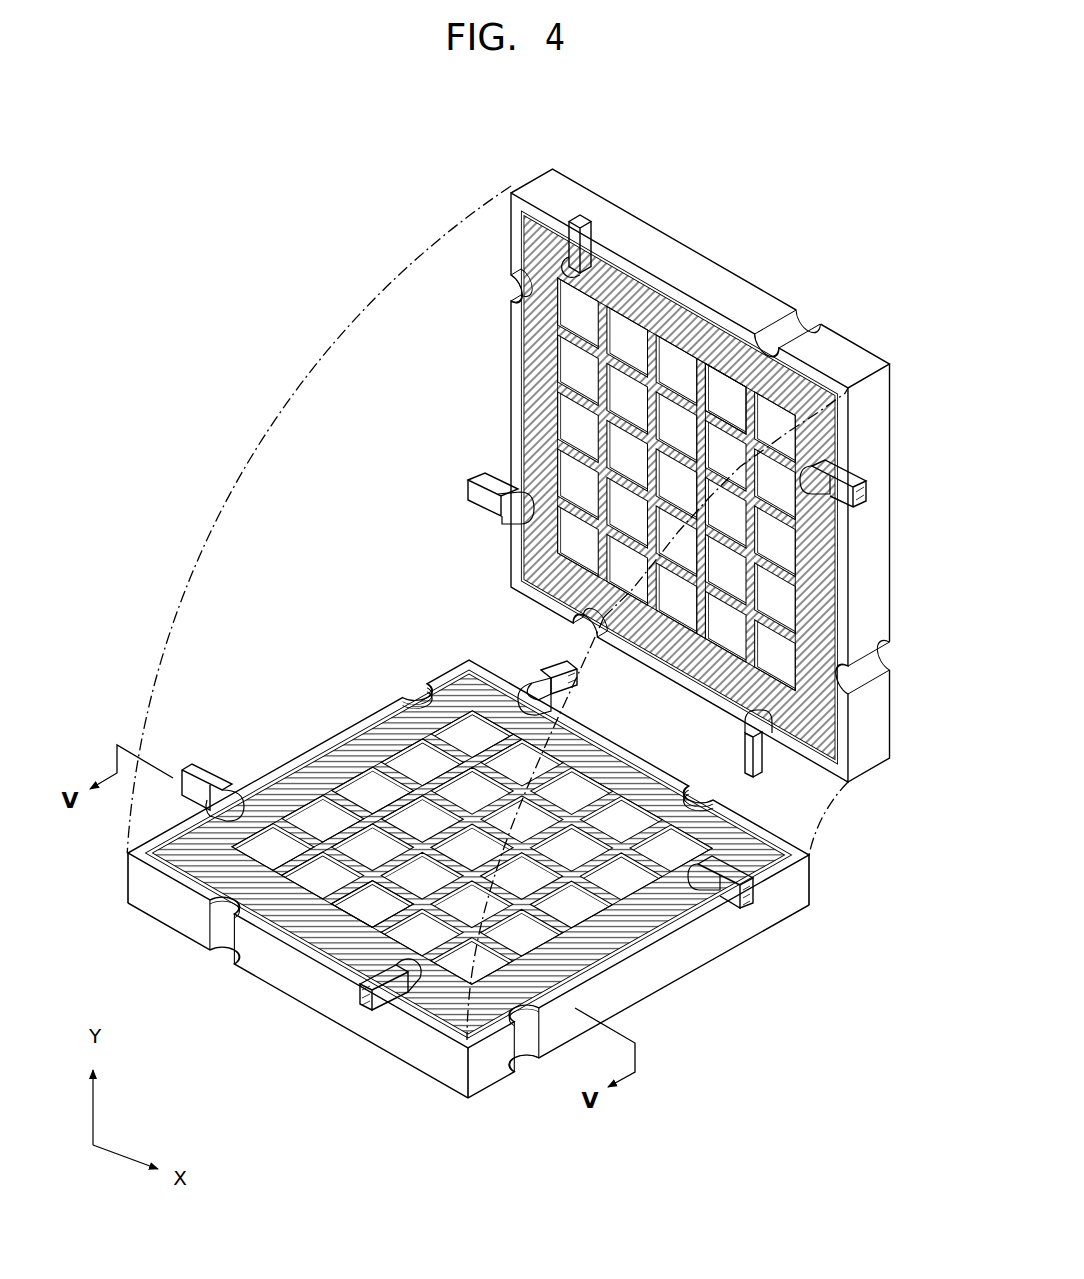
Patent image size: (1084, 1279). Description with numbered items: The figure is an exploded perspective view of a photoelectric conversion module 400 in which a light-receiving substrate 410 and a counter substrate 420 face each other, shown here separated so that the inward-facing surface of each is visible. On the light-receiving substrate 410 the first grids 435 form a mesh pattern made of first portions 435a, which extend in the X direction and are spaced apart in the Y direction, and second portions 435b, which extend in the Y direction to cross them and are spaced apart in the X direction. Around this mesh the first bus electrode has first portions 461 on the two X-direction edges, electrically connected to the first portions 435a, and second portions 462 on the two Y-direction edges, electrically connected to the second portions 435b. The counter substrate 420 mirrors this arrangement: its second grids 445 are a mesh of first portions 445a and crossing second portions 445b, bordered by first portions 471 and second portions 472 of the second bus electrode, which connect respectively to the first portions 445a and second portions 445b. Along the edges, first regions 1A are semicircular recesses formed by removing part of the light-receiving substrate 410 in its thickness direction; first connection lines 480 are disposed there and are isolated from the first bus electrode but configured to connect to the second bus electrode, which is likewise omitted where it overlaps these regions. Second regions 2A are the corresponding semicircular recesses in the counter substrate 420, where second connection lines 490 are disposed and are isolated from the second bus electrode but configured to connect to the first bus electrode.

The photoelectric conversion module 400 is at (295, 228).
The light-receiving substrate 410 is at (861, 355).
The counter substrate 420 is at (722, 940).
The first grids 435 is at (828, 268).
The first portions of the first grids 435a is at (740, 425).
The second portions of the first grids 435b is at (703, 372).
The second grids 445 is at (210, 1016).
The first portions of the second grids 445a is at (357, 905).
The second portions of the second grids 445b is at (310, 880).
The first portions of the first bus electrode 461 is at (527, 413).
The second portions of the first bus electrode 462 is at (667, 300).
The first portions of the second bus electrode 471 is at (313, 765).
The second portions of the second bus electrode 472 is at (482, 685).
The first connection lines 480 is at (545, 672).
The second connection lines 490 is at (581, 212).
The first regions 1A is at (512, 290).
The second regions 2A is at (553, 1052).